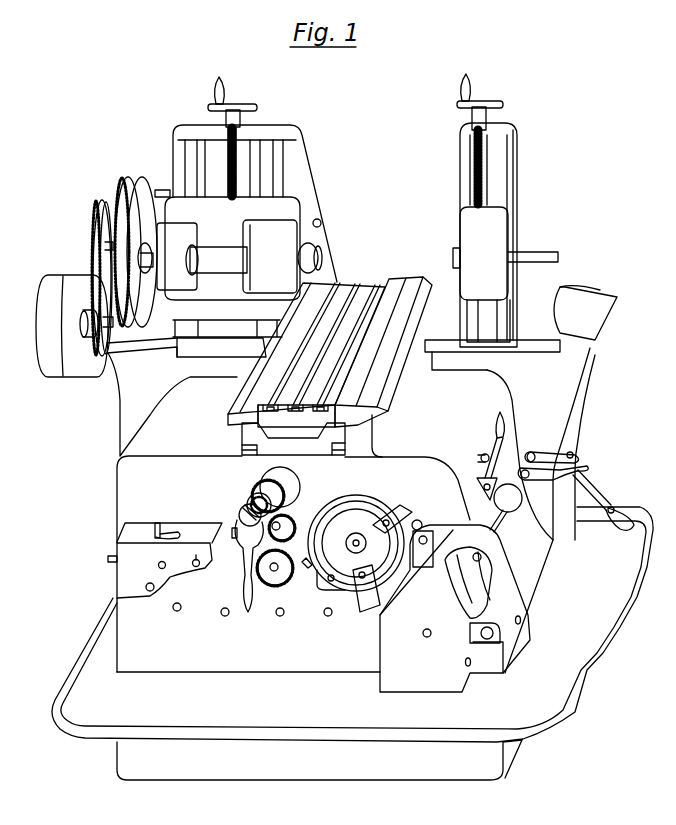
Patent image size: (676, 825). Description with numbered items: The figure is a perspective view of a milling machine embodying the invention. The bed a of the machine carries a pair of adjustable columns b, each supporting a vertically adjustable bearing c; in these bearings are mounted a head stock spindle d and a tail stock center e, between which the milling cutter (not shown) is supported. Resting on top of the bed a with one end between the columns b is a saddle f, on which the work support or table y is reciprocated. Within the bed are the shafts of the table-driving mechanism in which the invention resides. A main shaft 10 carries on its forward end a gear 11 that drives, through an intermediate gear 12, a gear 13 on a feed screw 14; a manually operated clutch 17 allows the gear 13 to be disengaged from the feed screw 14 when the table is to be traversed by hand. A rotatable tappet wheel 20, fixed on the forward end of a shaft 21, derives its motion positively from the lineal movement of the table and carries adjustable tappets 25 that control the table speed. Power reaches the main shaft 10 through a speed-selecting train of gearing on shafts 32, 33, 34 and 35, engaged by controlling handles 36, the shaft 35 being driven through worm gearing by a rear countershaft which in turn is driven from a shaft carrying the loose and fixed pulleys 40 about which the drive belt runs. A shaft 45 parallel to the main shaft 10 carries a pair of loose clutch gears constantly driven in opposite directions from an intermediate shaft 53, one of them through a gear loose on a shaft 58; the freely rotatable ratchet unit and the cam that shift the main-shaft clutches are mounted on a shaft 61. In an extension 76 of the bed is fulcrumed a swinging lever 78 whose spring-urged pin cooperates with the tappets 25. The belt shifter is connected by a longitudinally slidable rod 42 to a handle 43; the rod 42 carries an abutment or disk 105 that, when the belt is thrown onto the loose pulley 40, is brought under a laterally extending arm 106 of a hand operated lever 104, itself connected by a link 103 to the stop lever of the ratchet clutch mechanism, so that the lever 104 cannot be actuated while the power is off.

The bed a is at (330, 512).
The adjustable columns b is at (255, 179).
The vertically adjustable bearings c is at (203, 273).
The head stock spindle d is at (239, 256).
The tail stock center e is at (547, 252).
The saddle f is at (309, 446).
The work table y is at (330, 355).
The loose and fixed pulleys 40 is at (57, 350).
The controlling handles 36 is at (164, 534).
The shaft 33 is at (158, 565).
The shaft 32 is at (188, 554).
The shaft 34 is at (150, 592).
The shaft 35 is at (177, 612).
The shaft 61 is at (224, 617).
The intermediate shaft 53 is at (279, 617).
The shaft 58 is at (330, 617).
The gear 13 is at (263, 489).
The manually operated clutch 17 is at (252, 507).
The feed screw 14 is at (248, 521).
The intermediate gear 12 is at (297, 514).
The main shaft 10 is at (278, 571).
The gear 11 is at (262, 572).
The tappet wheel 20 is at (362, 513).
The shaft 21 is at (352, 554).
The adjustable tappets 25 is at (398, 506).
The shaft 45 is at (301, 557).
The swinging lever 78 is at (425, 523).
The extension of the bed 76 is at (405, 683).
The longitudinally slidable rod 42 is at (497, 528).
The handle 43 is at (583, 480).
The link 103 is at (485, 453).
The hand operated lever 104 is at (506, 425).
The abutment or disk 105 is at (518, 505).
The laterally extending arm 106 is at (521, 455).